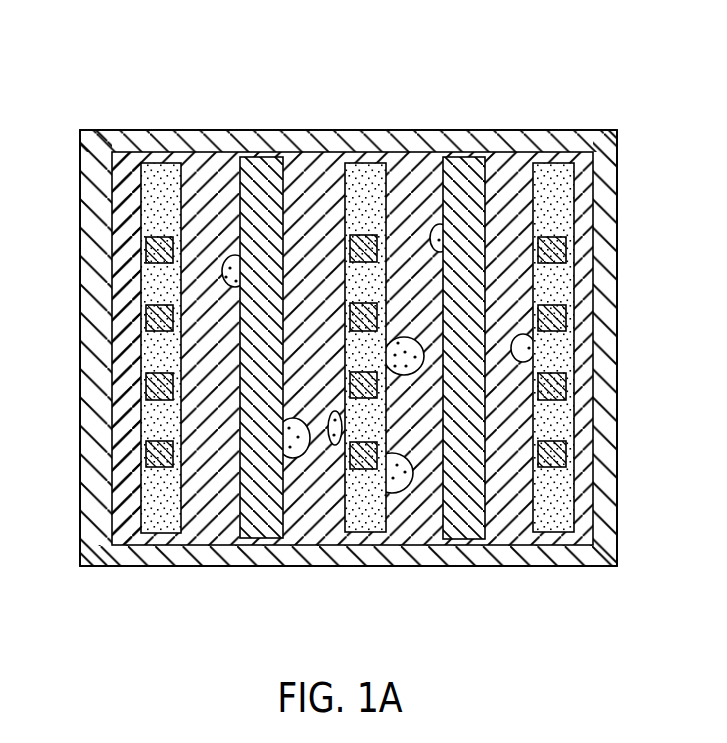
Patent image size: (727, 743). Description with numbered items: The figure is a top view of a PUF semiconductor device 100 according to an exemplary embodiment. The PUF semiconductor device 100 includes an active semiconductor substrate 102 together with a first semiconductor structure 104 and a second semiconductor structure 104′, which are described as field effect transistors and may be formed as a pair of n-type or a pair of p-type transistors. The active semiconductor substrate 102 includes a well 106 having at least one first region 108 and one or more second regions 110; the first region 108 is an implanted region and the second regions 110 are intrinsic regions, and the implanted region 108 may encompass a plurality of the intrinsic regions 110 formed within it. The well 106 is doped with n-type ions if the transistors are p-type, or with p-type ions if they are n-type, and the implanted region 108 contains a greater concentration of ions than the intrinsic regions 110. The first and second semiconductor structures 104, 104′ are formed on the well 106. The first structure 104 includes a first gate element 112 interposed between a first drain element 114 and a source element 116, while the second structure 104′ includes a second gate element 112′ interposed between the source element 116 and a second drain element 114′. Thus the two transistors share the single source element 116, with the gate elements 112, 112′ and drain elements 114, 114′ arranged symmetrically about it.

The PUF semiconductor device 100 is at (90, 60).
The active semiconductor substrate 102 is at (98, 303).
The first semiconductor structure 104 is at (157, 349).
The second semiconductor structure 104′ is at (548, 349).
The well 106 is at (128, 395).
The first region 108 is at (222, 530).
The second region 110 is at (392, 480).
The first gate element 112 is at (270, 173).
The second gate element 112′ is at (464, 175).
The first drain element 114 is at (162, 517).
The second drain element 114′ is at (557, 520).
The source element 116 is at (365, 517).